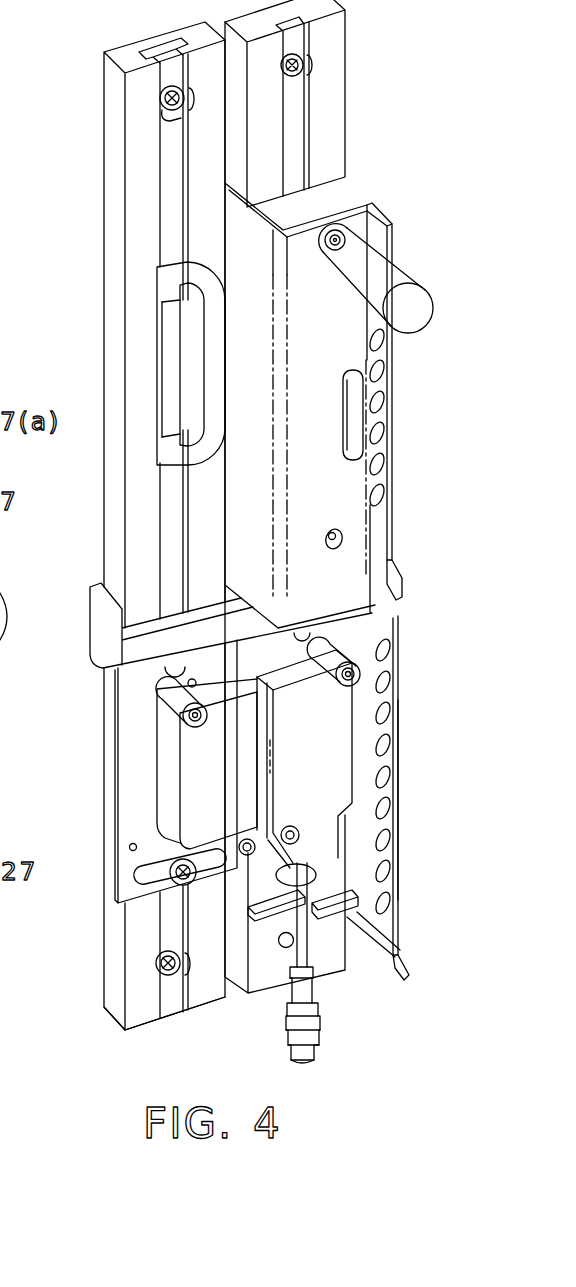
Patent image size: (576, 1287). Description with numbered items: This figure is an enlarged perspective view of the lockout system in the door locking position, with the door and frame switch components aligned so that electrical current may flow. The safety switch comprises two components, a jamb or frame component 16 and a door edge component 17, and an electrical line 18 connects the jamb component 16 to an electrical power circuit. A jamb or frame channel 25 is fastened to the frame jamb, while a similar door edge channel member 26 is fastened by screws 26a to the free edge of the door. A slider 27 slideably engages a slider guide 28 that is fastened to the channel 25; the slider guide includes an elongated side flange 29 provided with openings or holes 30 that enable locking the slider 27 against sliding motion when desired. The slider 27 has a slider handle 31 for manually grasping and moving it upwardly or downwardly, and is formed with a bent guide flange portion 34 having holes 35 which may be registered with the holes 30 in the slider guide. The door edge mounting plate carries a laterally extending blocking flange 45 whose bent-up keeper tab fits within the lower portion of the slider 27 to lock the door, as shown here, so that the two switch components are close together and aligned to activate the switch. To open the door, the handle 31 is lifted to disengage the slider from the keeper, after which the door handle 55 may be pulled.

The jamb or frame component 16 is at (327, 715).
The door edge component 17 is at (205, 786).
The electrical line 18 is at (305, 1045).
The jamb or frame channel 25 is at (327, 52).
The door edge channel member 26 is at (107, 125).
The screws 26a is at (127, 990).
The slider 27 is at (375, 560).
The slider guide 28 is at (410, 710).
The elongated side flange 29 is at (398, 793).
The openings or holes 30 is at (380, 745).
The slider handle 31 is at (407, 268).
The bent guide flange portion 34 is at (390, 487).
The holes 35 is at (377, 403).
The blocking flange 45 is at (162, 640).
The door handle 55 is at (173, 286).